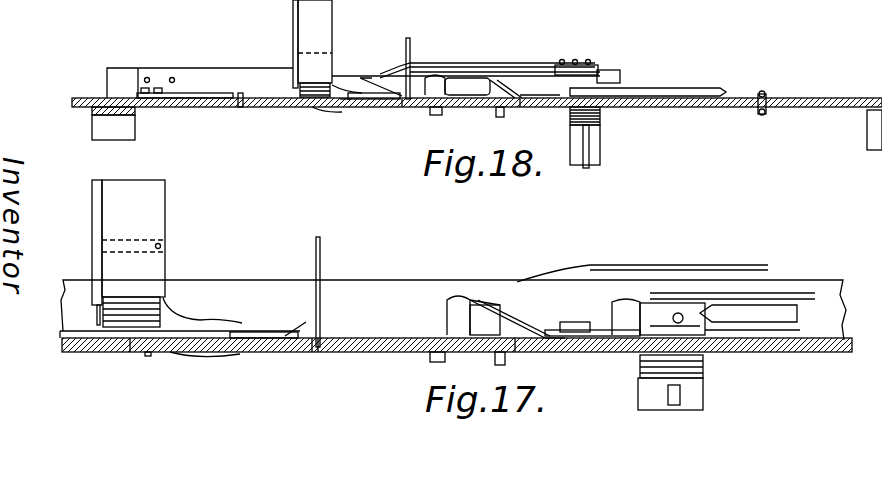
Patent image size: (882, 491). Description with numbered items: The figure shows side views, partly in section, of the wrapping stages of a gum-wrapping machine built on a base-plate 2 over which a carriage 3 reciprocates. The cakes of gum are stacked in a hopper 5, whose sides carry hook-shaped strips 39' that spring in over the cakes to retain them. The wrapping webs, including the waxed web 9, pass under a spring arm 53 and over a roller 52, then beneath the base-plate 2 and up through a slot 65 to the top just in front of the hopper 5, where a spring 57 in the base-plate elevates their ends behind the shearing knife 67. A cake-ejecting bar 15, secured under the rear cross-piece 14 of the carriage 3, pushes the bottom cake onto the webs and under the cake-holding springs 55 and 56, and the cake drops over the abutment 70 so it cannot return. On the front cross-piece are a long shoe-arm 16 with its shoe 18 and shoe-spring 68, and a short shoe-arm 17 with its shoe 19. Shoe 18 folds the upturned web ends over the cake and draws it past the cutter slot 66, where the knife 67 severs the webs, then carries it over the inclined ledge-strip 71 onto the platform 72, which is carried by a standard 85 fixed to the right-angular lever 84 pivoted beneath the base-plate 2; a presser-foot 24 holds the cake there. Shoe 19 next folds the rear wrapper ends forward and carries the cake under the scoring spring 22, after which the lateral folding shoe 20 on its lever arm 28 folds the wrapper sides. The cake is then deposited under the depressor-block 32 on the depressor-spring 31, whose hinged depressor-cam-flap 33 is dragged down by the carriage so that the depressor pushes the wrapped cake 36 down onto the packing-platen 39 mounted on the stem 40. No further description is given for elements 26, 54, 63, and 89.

In FIG. 18, the base-plate 2 is at (157, 107).
In FIG. 17, the base-plate 2 is at (82, 352).
In FIG. 18, the carriage 3 is at (353, 83).
In FIG. 17, the carriage 3 is at (453, 310).
In FIG. 18, the hopper 5 is at (315, 48).
In FIG. 17, the hopper 5 is at (133, 253).
In FIG. 18, the waxed web 9 is at (467, 87).
In FIG. 18, the cross-piece 14 is at (575, 48).
In FIG. 18, the cake-ejecting bar 15 is at (208, 93).
In FIG. 17, the cake-ejecting bar 15 is at (62, 330).
In FIG. 18, the long shoe-arm 16 is at (458, 64).
In FIG. 17, the long shoe-arm 16 is at (642, 270).
In FIG. 18, the short shoe-arm 17 is at (512, 72).
In FIG. 17, the short shoe-arm 17 is at (716, 300).
In FIG. 17, the shoe 18 is at (458, 315).
In FIG. 18, the shoe 19 is at (435, 85).
In FIG. 17, the shoe 19 is at (626, 317).
In FIG. 18, the lateral folding shoe 20 is at (548, 99).
In FIG. 17, the lateral folding shoe 20 is at (560, 332).
In FIG. 17, the scoring spring 22 is at (510, 315).
In FIG. 17, the presser-foot 24 is at (486, 320).
In FIG. 17, the bar 26 is at (592, 352).
In FIG. 17, the lever arm 28 is at (580, 317).
In FIG. 18, the depressor-spring 31 is at (724, 92).
In FIG. 17, the depressor-block 32 is at (672, 319).
In FIG. 18, the depressor-cam-flap 33 is at (610, 79).
In FIG. 17, the depressor-cam-flap 33 is at (688, 313).
In FIG. 18, the cake 36 is at (602, 116).
In FIG. 17, the cake 36 is at (704, 366).
In FIG. 18, the packing-platen 39 is at (600, 145).
In FIG. 17, the packing-platen 39 is at (685, 394).
In FIG. 18, the strip 39' is at (283, 44).
In FIG. 17, the strip 39' is at (83, 252).
In FIG. 18, the stem 40 is at (583, 140).
In FIG. 17, the stem 40 is at (668, 392).
In FIG. 17, the roller 52 is at (684, 334).
In FIG. 17, the spring arm 53 is at (752, 338).
In FIG. 17, the box 54 is at (748, 313).
In FIG. 17, the cake-holding spring 55 is at (221, 314).
In FIG. 18, the cake-holding spring 56 is at (347, 85).
In FIG. 17, the cake-holding spring 56 is at (192, 318).
In FIG. 18, the spring 57 is at (385, 100).
In FIG. 17, the spring 57 is at (293, 340).
In FIG. 18, the pin 63 is at (241, 107).
In FIG. 18, the slot 65 is at (330, 109).
In FIG. 17, the slot 65 is at (176, 354).
In FIG. 18, the cutter slot 66 is at (404, 100).
In FIG. 17, the cutter slot 66 is at (323, 338).
In FIG. 18, the shearing knife 67 is at (412, 53).
In FIG. 17, the shearing knife 67 is at (321, 256).
In FIG. 18, the shoe-spring 68 is at (378, 82).
In FIG. 17, the shoe-spring 68 is at (476, 330).
In FIG. 18, the abutment 70 is at (346, 100).
In FIG. 17, the abutment 70 is at (132, 352).
In FIG. 18, the inclined ledge-strip 71 is at (470, 107).
In FIG. 17, the inclined ledge-strip 71 is at (440, 356).
In FIG. 18, the platform 72 is at (520, 108).
In FIG. 17, the platform 72 is at (518, 352).
In FIG. 18, the right-angular lever 84 is at (519, 85).
In FIG. 18, the standard 85 is at (500, 117).
In FIG. 17, the standard 85 is at (496, 360).
In FIG. 17, the pin 89 is at (148, 356).